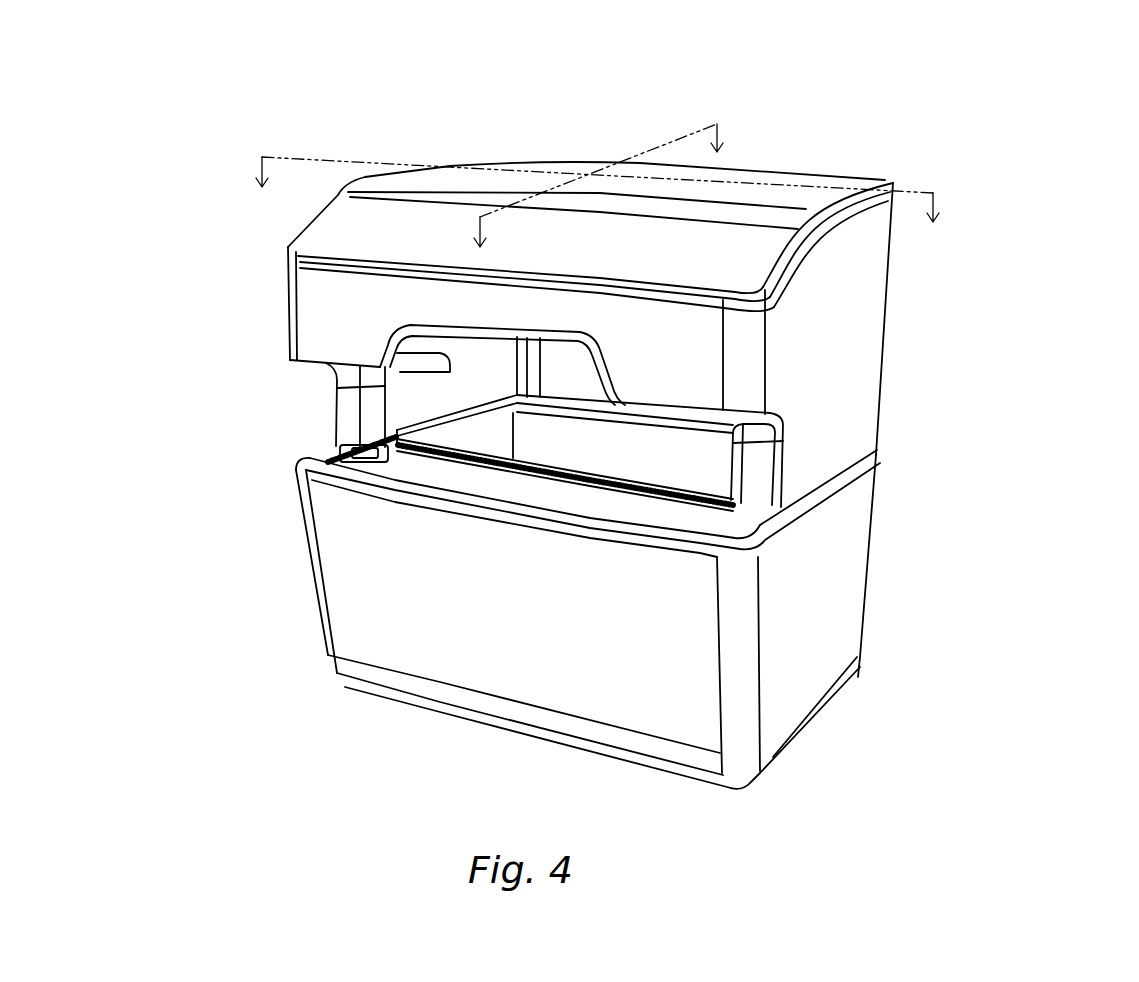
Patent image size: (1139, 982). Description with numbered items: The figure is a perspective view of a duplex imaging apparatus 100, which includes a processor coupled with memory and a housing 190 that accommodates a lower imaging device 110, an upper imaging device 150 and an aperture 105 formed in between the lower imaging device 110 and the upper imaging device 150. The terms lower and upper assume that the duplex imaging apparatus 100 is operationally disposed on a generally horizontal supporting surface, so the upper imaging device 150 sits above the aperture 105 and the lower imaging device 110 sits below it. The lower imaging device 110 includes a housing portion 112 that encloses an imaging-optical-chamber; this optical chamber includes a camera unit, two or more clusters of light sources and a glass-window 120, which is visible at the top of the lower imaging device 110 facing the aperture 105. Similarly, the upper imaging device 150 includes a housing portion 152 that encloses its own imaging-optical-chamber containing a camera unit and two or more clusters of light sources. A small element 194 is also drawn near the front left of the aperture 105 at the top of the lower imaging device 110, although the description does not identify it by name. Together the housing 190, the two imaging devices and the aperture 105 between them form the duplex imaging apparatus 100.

The duplex imaging apparatus 100 is at (828, 138).
The upper imaging device 150 is at (228, 152).
The housing portion 152 is at (541, 163).
The aperture 105 is at (228, 363).
The operation panel 194 is at (340, 445).
The glass-window 120 is at (564, 449).
The lower imaging device 110 is at (230, 455).
The housing portion 112 is at (858, 552).
The housing 190 is at (879, 456).